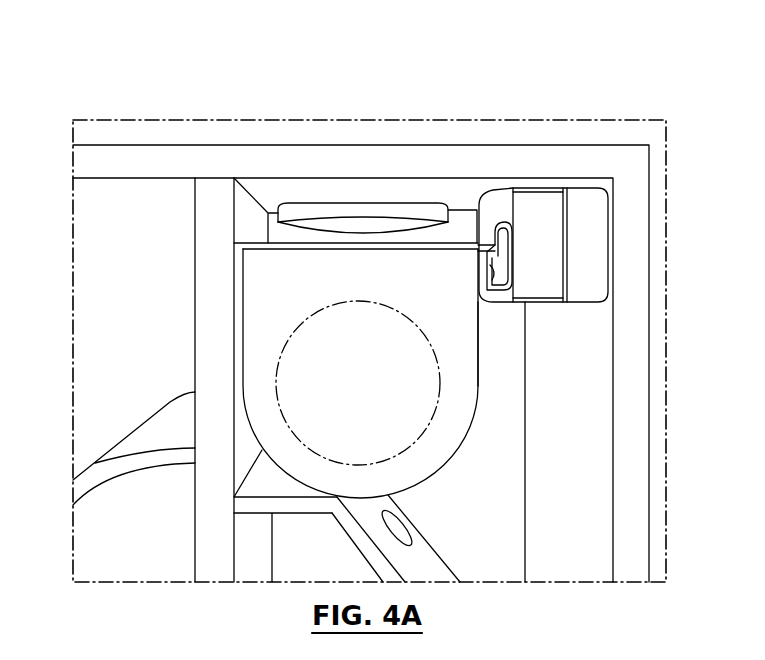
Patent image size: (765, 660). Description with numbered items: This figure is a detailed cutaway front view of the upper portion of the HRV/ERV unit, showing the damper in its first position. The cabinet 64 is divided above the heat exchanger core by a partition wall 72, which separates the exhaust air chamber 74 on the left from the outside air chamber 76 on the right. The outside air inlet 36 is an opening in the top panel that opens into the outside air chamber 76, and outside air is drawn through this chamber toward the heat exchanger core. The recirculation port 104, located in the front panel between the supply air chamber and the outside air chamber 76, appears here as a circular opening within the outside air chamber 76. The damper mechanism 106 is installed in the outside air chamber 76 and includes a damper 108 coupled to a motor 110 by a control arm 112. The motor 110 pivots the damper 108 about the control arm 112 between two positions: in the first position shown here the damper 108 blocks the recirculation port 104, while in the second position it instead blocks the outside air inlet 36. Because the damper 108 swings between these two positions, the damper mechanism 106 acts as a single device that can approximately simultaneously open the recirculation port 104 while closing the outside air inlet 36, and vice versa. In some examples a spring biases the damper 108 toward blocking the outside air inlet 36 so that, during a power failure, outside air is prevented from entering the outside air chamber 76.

The outside air inlet 36 is at (330, 207).
The cabinet 64 is at (590, 448).
The partition wall 72 is at (202, 292).
The exhaust air chamber 74 is at (112, 364).
The outside air chamber 76 is at (500, 422).
The recirculation port 104 is at (358, 302).
The damper mechanism 106 is at (421, 260).
The damper 108 is at (356, 283).
The motor 110 is at (543, 185).
The control arm 112 is at (481, 215).